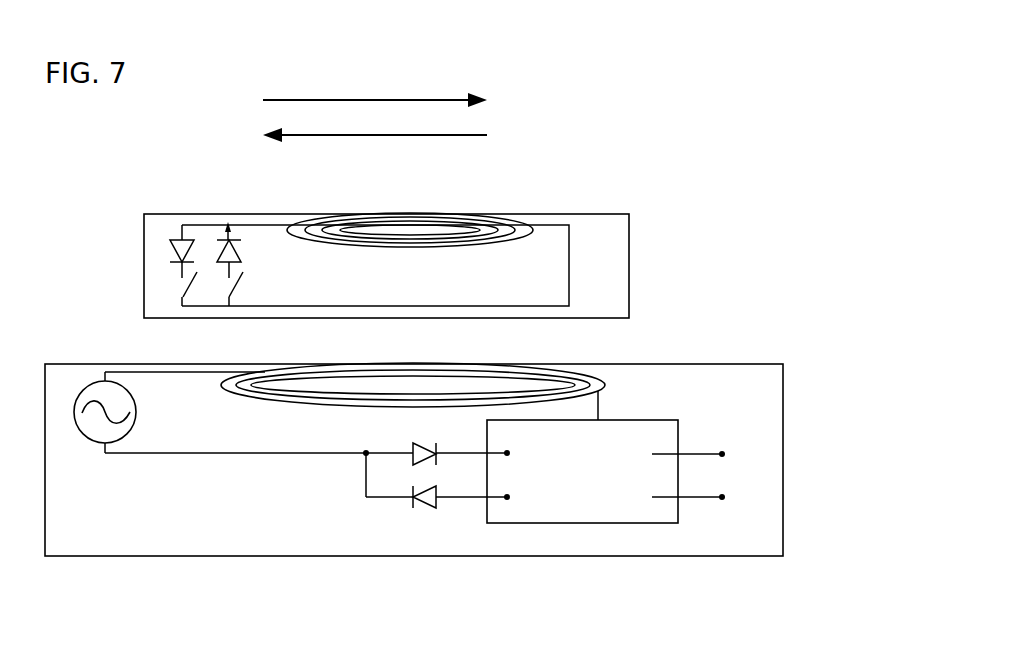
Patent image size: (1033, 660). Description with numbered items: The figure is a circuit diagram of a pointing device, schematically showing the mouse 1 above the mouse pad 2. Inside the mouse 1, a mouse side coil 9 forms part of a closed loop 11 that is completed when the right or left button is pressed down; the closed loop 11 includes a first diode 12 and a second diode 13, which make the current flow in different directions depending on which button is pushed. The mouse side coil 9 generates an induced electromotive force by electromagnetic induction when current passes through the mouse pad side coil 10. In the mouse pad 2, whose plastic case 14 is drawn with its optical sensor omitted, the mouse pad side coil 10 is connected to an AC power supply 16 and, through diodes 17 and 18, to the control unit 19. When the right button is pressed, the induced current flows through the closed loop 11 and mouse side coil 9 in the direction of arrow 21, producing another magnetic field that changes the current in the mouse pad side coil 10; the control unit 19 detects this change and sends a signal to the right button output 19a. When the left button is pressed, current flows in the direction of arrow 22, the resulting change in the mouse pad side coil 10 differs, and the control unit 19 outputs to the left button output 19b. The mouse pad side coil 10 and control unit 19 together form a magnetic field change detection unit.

The mouse 1 is at (640, 277).
The mouse pad 2 is at (794, 453).
The mouse side coil 9 is at (473, 215).
The mouse pad side coil 10 is at (498, 370).
The closed loop 11 is at (569, 260).
The first diode 12 is at (225, 238).
The second diode 13 is at (178, 238).
The plastic case 14 is at (783, 408).
The AC power supply 16 is at (88, 385).
The diode 17 is at (413, 468).
The diode 18 is at (427, 508).
The control unit 19 is at (603, 508).
The right button output 19a is at (722, 454).
The left button output 19b is at (722, 497).
The arrow 21 is at (473, 133).
The arrow 22 is at (287, 98).